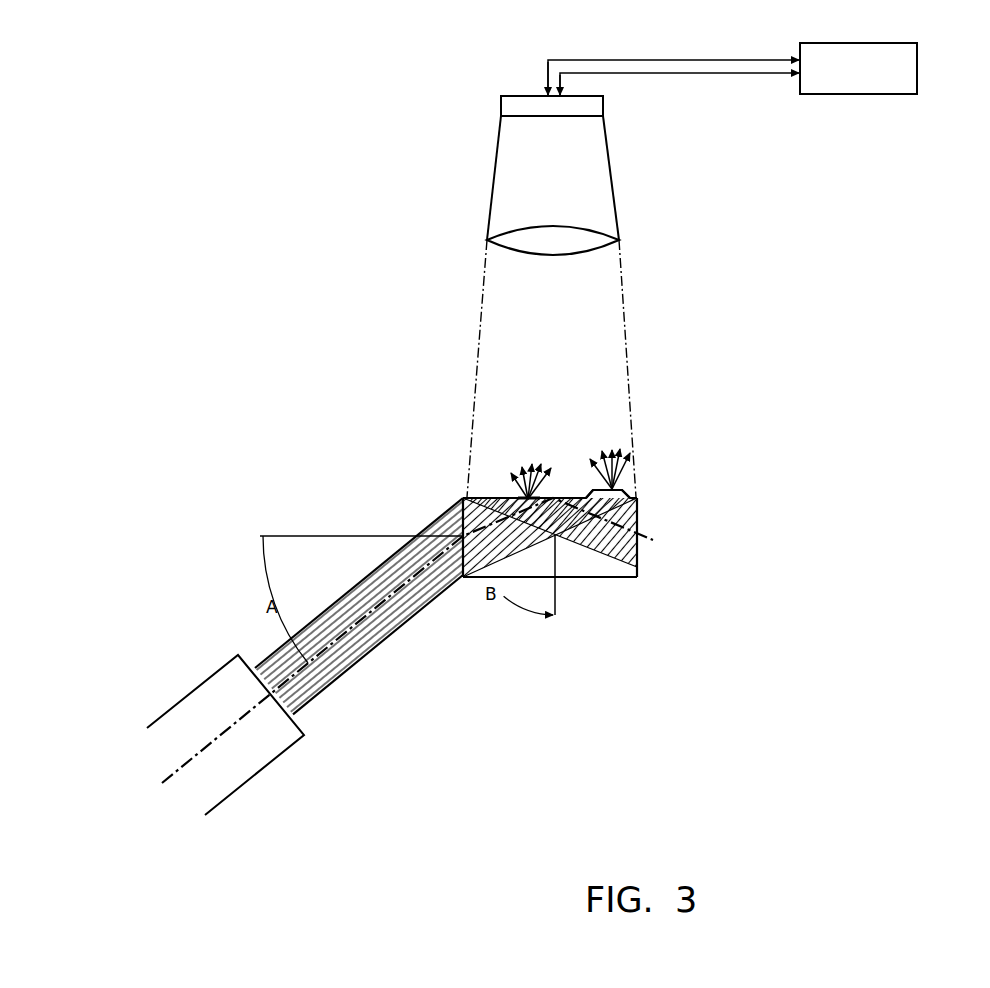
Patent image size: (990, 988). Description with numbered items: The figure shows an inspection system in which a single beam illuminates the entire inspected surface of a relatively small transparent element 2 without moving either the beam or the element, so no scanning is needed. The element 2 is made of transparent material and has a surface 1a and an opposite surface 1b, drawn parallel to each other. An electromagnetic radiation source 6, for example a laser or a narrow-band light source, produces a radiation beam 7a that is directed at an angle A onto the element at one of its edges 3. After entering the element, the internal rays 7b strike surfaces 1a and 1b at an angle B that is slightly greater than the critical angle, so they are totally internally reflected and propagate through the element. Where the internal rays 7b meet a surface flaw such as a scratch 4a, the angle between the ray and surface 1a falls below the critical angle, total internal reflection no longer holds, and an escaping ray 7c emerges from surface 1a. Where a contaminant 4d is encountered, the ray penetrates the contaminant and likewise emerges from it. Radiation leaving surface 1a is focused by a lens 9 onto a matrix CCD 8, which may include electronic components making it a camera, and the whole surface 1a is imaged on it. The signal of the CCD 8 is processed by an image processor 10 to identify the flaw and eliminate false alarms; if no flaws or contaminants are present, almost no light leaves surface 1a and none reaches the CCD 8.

The surface 1a is at (638, 416).
The surface 1b is at (570, 651).
The transparent element 2 is at (602, 611).
The edge 3 is at (503, 456).
The scratch 4a is at (590, 417).
The contaminant 4d is at (674, 416).
The electromagnetic radiation source 6 is at (246, 763).
The radiation beam 7a is at (365, 627).
The internal rays 7b is at (492, 416).
The escaping ray 7c is at (610, 417).
The matrix CCD 8 is at (664, 296).
The lens 9 is at (624, 260).
The image processor 10 is at (815, 85).